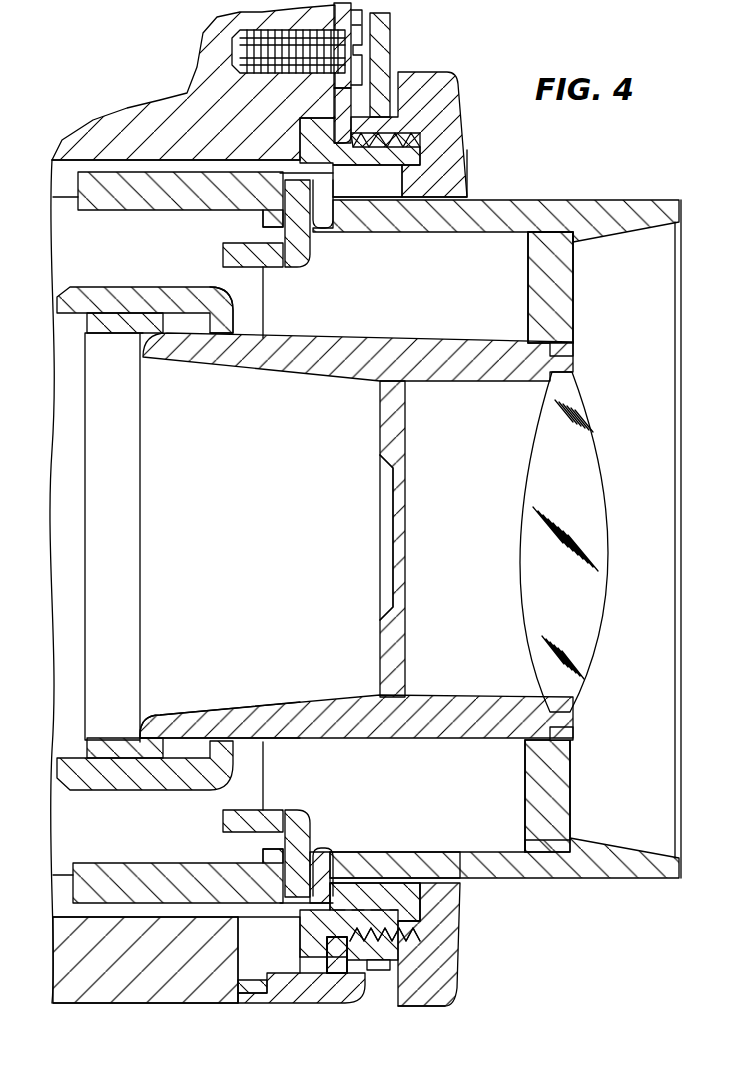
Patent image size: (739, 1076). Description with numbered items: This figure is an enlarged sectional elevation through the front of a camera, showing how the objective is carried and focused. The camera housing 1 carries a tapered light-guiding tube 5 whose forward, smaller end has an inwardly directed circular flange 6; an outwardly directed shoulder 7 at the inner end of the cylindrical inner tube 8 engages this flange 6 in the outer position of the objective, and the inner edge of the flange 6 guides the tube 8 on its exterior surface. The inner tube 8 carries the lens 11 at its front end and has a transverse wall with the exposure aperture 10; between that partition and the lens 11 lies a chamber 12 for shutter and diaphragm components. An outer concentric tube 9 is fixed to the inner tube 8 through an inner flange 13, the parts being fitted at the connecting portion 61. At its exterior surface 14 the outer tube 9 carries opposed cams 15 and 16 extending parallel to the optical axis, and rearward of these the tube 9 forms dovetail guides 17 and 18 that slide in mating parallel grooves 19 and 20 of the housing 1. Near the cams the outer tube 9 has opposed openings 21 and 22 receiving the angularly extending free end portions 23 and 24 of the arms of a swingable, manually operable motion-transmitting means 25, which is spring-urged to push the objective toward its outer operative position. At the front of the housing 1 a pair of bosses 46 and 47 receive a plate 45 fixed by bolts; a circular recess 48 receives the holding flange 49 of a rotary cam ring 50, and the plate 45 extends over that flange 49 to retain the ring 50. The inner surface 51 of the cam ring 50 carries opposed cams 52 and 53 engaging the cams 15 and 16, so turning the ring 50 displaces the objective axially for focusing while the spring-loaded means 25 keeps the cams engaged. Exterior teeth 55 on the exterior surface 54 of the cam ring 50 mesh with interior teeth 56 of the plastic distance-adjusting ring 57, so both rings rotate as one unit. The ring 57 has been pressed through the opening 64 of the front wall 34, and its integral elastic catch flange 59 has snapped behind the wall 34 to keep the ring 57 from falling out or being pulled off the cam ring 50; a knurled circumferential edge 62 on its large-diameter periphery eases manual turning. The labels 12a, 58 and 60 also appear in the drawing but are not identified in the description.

The camera housing 1 is at (98, 133).
The tapered light-guiding tube 5 is at (110, 300).
The inwardly directed circular flange 6 is at (225, 335).
The outwardly directed shoulder 7 is at (170, 335).
The inner tube 8 is at (467, 377).
The outer concentric tube 9 is at (617, 217).
The exposure aperture 10 is at (393, 500).
The lens 11 is at (575, 412).
The chamber 12 is at (417, 587).
The inner tube wall portion 12a is at (510, 793).
The inner flange 13 is at (555, 290).
The exterior surface 14 is at (632, 880).
The cam 15 is at (320, 877).
The cam 16 is at (340, 232).
The dovetail guide 17 is at (93, 883).
The dovetail guide 18 is at (112, 212).
The groove 19 is at (183, 913).
The groove 20 is at (157, 163).
The opening 21 is at (253, 873).
The opening 22 is at (283, 195).
The free end portion 23 is at (293, 857).
The free end portion 24 is at (297, 190).
The manually operable motion-transmitting means 25 is at (222, 268).
The front wall 34 is at (386, 25).
The plate 45 is at (338, 97).
The boss 46 is at (262, 12).
The boss 47 is at (348, 45).
The circular recess 48 is at (300, 940).
The holding flange 49 is at (313, 947).
The cam ring 50 is at (407, 157).
The inner surface 51 is at (408, 852).
The cam 52 is at (357, 890).
The cam 53 is at (387, 190).
The exterior surface 54 is at (417, 942).
The exterior teeth 55 is at (400, 925).
The interior teeth 56 is at (385, 934).
The focusing or distance-adjusting ring 57 is at (461, 900).
The serration 58 is at (337, 955).
The elastic catch flange 59 is at (393, 978).
The tube wall 60 is at (220, 715).
The connecting portion 61 is at (562, 352).
The knurled circumferential edge 62 is at (442, 1010).
The opening 64 is at (400, 128).